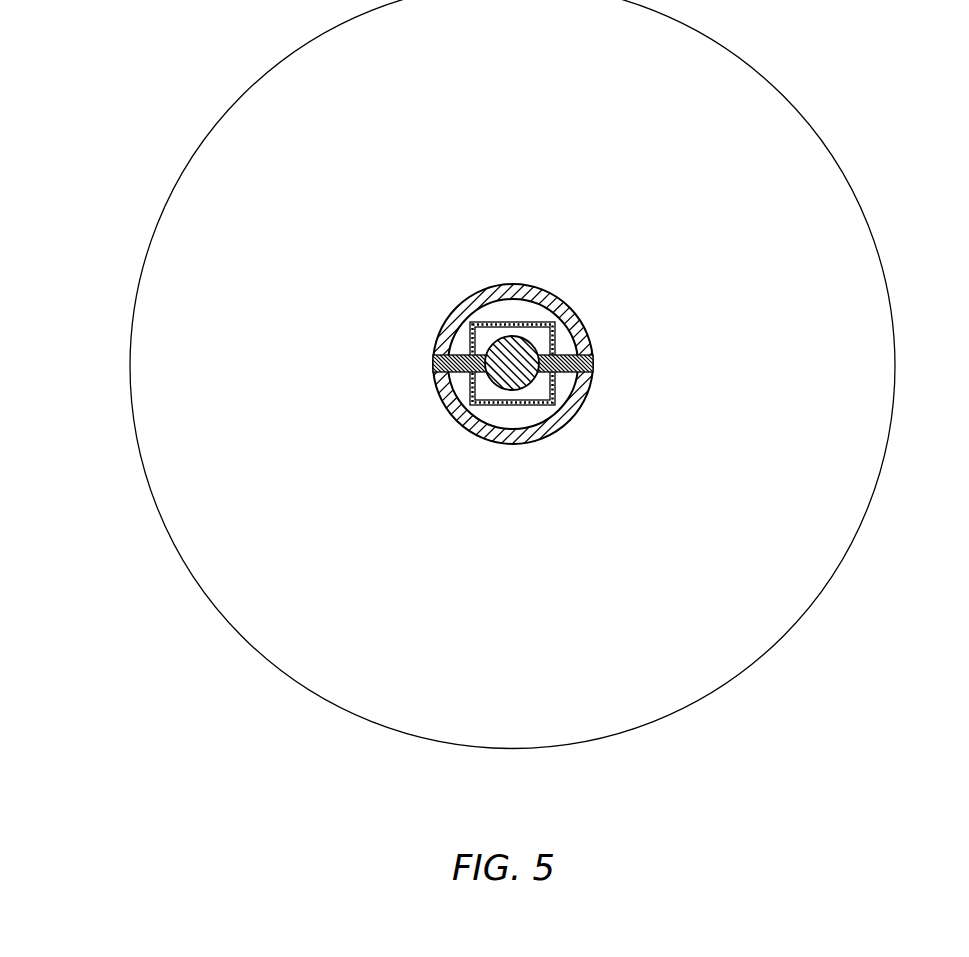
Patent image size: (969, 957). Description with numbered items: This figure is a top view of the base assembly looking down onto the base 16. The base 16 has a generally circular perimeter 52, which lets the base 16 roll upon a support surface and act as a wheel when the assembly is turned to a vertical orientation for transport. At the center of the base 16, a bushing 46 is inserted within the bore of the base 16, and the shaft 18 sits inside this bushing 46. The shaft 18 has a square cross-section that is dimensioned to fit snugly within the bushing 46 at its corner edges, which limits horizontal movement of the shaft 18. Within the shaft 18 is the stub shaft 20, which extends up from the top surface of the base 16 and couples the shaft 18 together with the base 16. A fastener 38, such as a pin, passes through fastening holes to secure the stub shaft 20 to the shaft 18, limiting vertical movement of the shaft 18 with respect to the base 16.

The base 16 is at (238, 503).
The shaft 18 is at (522, 325).
The stub shaft 20 is at (530, 363).
The fastener 38 is at (590, 367).
The bushing 46 is at (460, 317).
The circular perimeter 52 is at (747, 668).